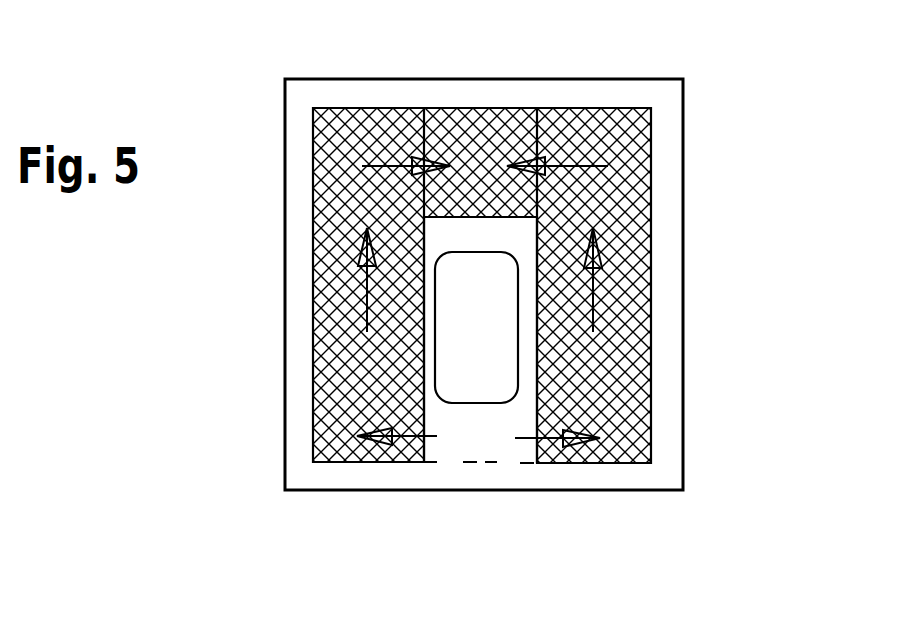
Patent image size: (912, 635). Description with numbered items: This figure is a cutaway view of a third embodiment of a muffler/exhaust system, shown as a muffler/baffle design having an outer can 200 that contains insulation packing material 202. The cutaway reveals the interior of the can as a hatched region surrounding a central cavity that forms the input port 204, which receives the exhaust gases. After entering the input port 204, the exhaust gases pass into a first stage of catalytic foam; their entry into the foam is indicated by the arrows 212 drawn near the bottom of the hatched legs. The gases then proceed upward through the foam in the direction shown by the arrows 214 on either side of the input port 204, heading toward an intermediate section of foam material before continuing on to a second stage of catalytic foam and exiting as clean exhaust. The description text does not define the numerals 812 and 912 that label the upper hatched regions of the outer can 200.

The outer can 200 is at (687, 208).
The insulation packing material 202 is at (667, 268).
The input port 204 is at (472, 360).
The arrows 212 is at (392, 447).
The arrows 214 is at (363, 310).
The top corner regions 812 is at (388, 163).
The top center region 912 is at (488, 130).